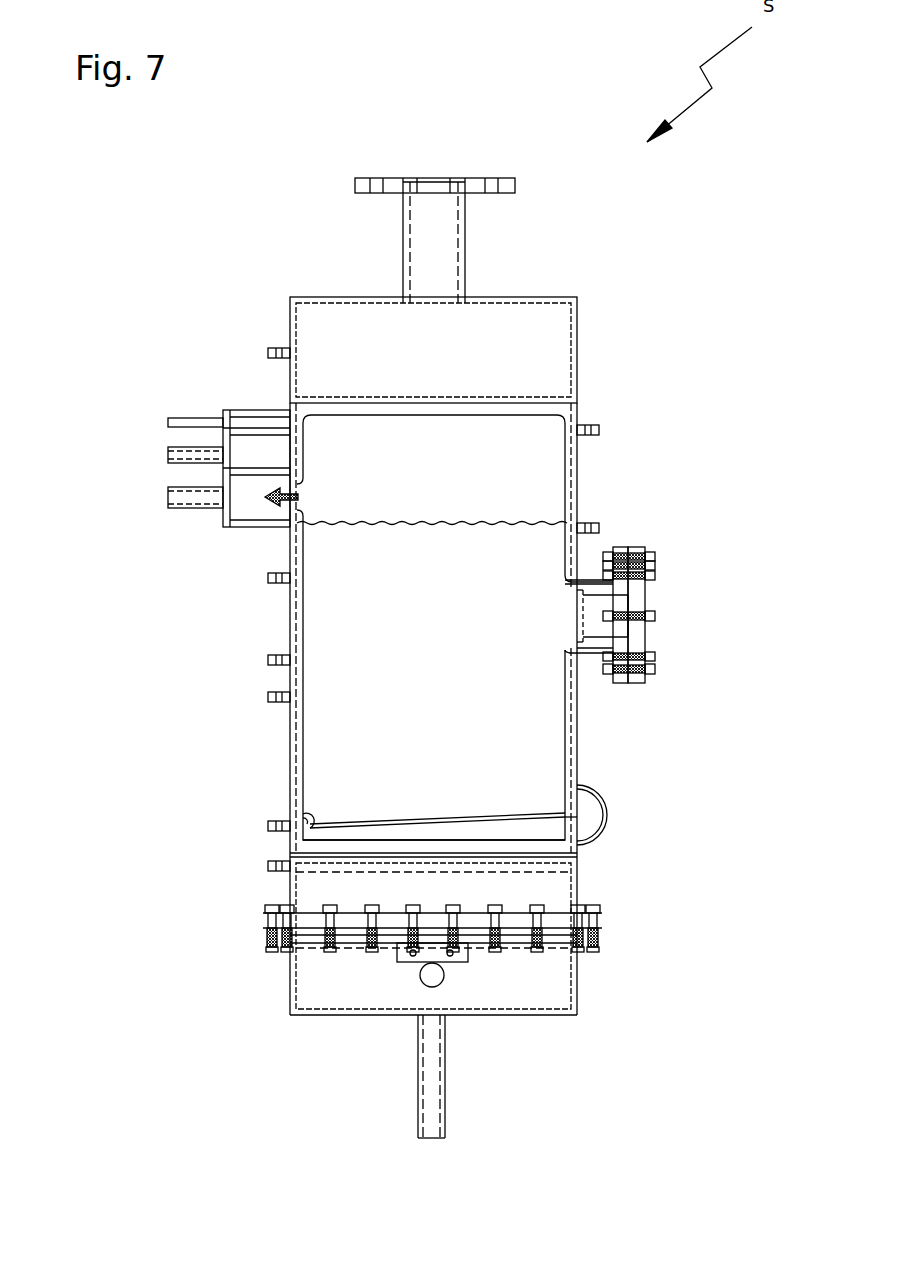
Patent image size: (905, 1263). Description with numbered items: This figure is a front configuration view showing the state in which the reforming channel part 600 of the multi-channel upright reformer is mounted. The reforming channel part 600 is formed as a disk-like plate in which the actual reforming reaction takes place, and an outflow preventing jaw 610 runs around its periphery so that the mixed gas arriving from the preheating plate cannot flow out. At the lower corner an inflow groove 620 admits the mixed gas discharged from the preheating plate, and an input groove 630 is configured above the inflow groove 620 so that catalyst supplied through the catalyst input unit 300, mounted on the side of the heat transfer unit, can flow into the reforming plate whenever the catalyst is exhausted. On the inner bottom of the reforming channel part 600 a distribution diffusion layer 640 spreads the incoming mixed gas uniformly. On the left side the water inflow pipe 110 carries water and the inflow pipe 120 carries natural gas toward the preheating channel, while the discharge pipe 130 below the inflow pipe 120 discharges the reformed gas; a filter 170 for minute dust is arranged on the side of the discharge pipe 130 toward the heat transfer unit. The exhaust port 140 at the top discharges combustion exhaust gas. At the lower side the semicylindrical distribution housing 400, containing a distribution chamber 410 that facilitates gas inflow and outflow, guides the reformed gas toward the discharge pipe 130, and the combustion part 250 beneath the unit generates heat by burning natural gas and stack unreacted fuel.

The water inflow pipe 110 is at (175, 422).
The inflow pipe 120 is at (173, 452).
The discharge pipe 130 is at (172, 500).
The exhaust port 140 is at (435, 178).
The filter 170 is at (268, 510).
The combustion part 250 is at (528, 1000).
The catalyst input unit 300 is at (642, 548).
The distribution housing 400 is at (607, 815).
The distribution chamber 410 is at (588, 808).
The reforming channel part 600 is at (548, 452).
The outflow preventing jaw 610 is at (297, 625).
The inflow groove 620 is at (593, 838).
The input groove 630 is at (578, 612).
The distribution diffusion layer 640 is at (305, 828).